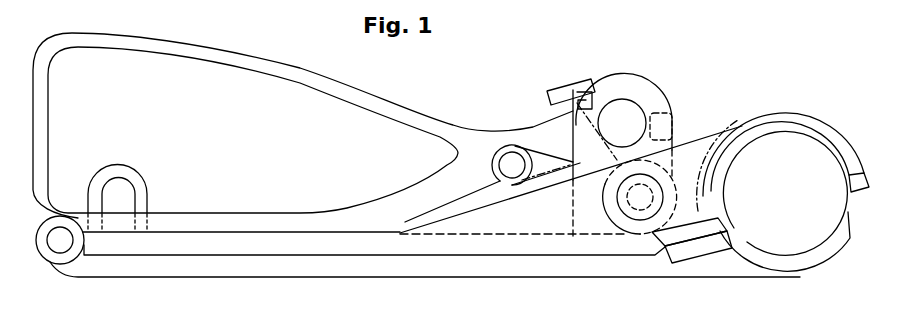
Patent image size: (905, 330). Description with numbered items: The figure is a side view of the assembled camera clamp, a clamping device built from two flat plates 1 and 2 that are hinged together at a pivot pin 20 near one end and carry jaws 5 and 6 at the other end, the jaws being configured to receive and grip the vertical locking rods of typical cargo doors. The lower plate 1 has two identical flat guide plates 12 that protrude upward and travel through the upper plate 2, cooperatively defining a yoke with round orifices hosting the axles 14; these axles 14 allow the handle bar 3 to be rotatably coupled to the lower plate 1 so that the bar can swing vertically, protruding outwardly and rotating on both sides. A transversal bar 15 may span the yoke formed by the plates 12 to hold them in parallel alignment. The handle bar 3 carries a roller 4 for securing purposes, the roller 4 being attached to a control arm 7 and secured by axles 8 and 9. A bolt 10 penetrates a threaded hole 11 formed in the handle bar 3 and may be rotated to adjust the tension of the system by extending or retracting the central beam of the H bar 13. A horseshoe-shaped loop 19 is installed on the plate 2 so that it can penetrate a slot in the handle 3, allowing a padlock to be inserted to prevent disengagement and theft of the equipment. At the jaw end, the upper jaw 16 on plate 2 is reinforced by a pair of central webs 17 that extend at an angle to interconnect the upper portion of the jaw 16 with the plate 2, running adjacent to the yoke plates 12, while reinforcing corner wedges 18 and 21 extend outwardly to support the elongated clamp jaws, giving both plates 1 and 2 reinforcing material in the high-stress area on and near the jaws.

The flat plate 1 is at (300, 276).
The flat plate 2 is at (225, 243).
The handle bar 3 is at (463, 127).
The roller 4 is at (632, 225).
The jaw 5 is at (782, 122).
The jaw 6 is at (787, 262).
The control arm 7 is at (542, 160).
The axle 8 is at (511, 161).
The axle 9 is at (645, 200).
The bolt 10 is at (560, 93).
The threaded hole 11 is at (583, 115).
The guide plate 12 is at (630, 88).
The H bar 13 is at (567, 183).
The axle 14 is at (636, 112).
The transversal bar 15 is at (663, 122).
The upper jaw 16 is at (810, 112).
The reinforcing web 17 is at (717, 127).
The reinforcing corner wedge 18 is at (707, 225).
The horseshoe-shaped loop 19 is at (130, 177).
The pivot pin 20 is at (62, 242).
The reinforcing corner wedge 21 is at (698, 246).